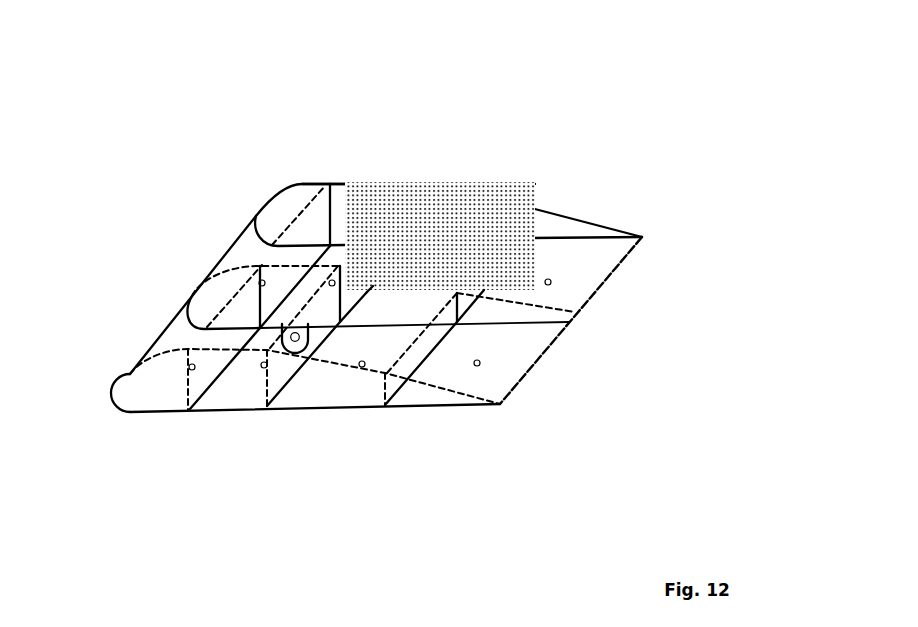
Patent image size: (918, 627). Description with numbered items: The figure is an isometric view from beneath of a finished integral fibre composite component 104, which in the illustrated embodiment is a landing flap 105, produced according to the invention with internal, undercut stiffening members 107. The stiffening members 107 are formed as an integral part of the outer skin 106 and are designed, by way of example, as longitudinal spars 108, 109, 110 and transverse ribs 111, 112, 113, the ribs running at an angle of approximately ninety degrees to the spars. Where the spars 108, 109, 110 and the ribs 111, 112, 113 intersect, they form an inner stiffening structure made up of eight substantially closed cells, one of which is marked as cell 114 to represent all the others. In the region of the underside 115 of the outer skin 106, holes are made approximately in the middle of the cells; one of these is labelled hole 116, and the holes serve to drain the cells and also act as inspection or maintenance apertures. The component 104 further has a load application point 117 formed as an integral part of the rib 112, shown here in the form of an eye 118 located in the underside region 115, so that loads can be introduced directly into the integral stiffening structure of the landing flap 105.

The fibre composite component 104 is at (328, 187).
The landing flap 105 is at (409, 108).
The outer skin 106 is at (457, 183).
The stiffening members 107 is at (436, 333).
The spar 108 is at (195, 388).
The spar 109 is at (262, 398).
The spar 110 is at (398, 377).
The rib 111 is at (135, 387).
The rib 112 is at (202, 303).
The rib 113 is at (270, 217).
The cell 114 is at (362, 350).
The underside 115 is at (454, 421).
The hole 116 is at (364, 368).
The load application point 117 is at (287, 327).
The eye 118 is at (296, 342).